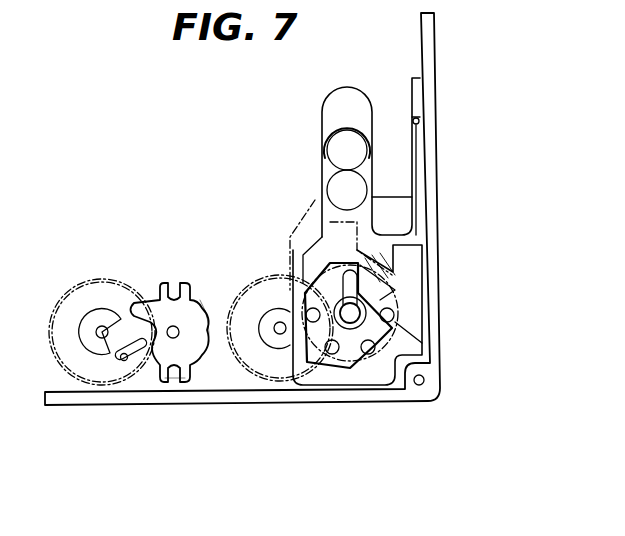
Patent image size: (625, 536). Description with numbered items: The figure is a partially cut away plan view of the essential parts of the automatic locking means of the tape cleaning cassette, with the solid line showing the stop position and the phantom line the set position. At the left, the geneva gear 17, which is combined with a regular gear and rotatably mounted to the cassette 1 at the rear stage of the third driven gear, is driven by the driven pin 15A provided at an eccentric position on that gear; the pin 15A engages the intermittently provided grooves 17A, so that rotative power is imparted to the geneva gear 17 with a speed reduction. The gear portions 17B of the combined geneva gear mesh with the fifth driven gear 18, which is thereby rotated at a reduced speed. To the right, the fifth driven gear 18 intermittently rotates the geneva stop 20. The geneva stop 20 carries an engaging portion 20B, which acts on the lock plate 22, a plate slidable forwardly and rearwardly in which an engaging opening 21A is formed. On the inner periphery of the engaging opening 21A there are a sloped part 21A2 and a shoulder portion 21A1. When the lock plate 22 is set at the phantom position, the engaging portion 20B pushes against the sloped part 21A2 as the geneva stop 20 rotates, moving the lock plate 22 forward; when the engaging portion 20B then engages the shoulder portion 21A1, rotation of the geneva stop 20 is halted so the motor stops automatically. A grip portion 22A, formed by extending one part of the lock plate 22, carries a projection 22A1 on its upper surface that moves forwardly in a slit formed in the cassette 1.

The frame 1 is at (433, 178).
The driven pin 15A is at (125, 360).
The geneva gear 17 is at (153, 307).
The grooves 17A is at (185, 385).
The gear portions 17B is at (212, 307).
The fifth driven gear 18 is at (253, 363).
The geneva stop 20 is at (380, 330).
The engaging portion 20B is at (360, 295).
The engaging opening 21A is at (318, 375).
The shoulder portion 21A1 is at (382, 292).
The sloped part 21A2 is at (410, 335).
The lock plate 22 is at (415, 242).
The grip portion 22A is at (335, 135).
The projection 22A1 is at (343, 187).